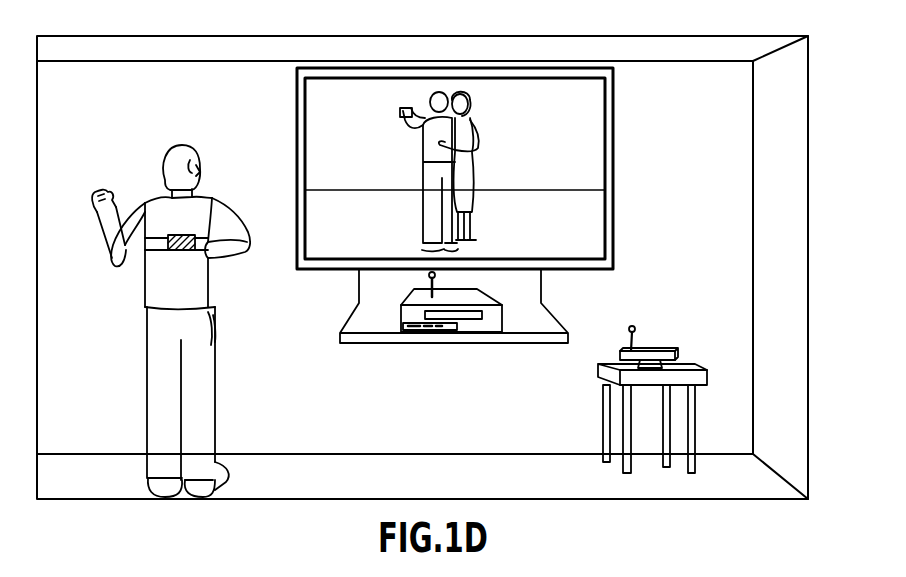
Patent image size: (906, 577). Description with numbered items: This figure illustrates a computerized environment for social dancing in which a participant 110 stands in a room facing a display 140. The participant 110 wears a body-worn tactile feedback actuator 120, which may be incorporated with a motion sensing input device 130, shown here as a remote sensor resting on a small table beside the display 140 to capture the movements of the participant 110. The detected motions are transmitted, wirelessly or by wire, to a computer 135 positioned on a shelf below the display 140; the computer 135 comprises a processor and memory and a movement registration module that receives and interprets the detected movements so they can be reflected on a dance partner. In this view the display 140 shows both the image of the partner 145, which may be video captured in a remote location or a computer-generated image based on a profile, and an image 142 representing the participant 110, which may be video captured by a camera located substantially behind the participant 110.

The participant 110 is at (164, 156).
The tactile feedback actuator 120 is at (169, 251).
The motion sensing input device 130 is at (660, 350).
The computer 135 is at (419, 331).
The display 140 is at (613, 153).
The image representing the participant 142 is at (431, 95).
The image of the partner 145 is at (468, 95).